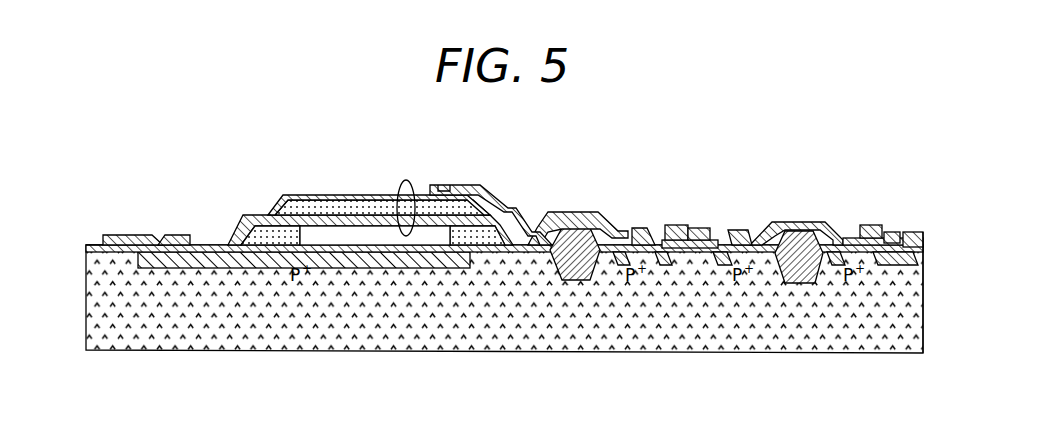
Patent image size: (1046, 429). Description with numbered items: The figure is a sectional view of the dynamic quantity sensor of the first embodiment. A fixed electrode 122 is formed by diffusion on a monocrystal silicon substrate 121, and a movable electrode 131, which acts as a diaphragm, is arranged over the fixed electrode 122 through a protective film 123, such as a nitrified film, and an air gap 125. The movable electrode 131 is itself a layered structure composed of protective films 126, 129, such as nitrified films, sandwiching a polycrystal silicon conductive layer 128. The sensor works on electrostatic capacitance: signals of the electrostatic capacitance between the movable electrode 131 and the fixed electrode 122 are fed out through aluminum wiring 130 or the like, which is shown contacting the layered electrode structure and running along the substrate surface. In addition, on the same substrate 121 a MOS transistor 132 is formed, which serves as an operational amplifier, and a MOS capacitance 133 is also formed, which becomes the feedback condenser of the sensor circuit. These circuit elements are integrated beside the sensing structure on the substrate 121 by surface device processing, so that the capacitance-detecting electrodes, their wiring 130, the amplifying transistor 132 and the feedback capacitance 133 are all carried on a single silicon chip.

The monocrystal silicon substrate 121 is at (338, 333).
The fixed electrode 122 is at (203, 244).
The protective film 123 is at (91, 243).
The air gap 125 is at (368, 230).
The protective film 126 is at (500, 210).
The polycrystal silicon conductive layer 128 is at (320, 208).
The protective film 129 is at (282, 195).
The aluminum wiring 130 is at (127, 232).
The movable electrode 131 is at (407, 181).
The MOS transistor 132 is at (680, 222).
The MOS capacitance 133 is at (858, 218).